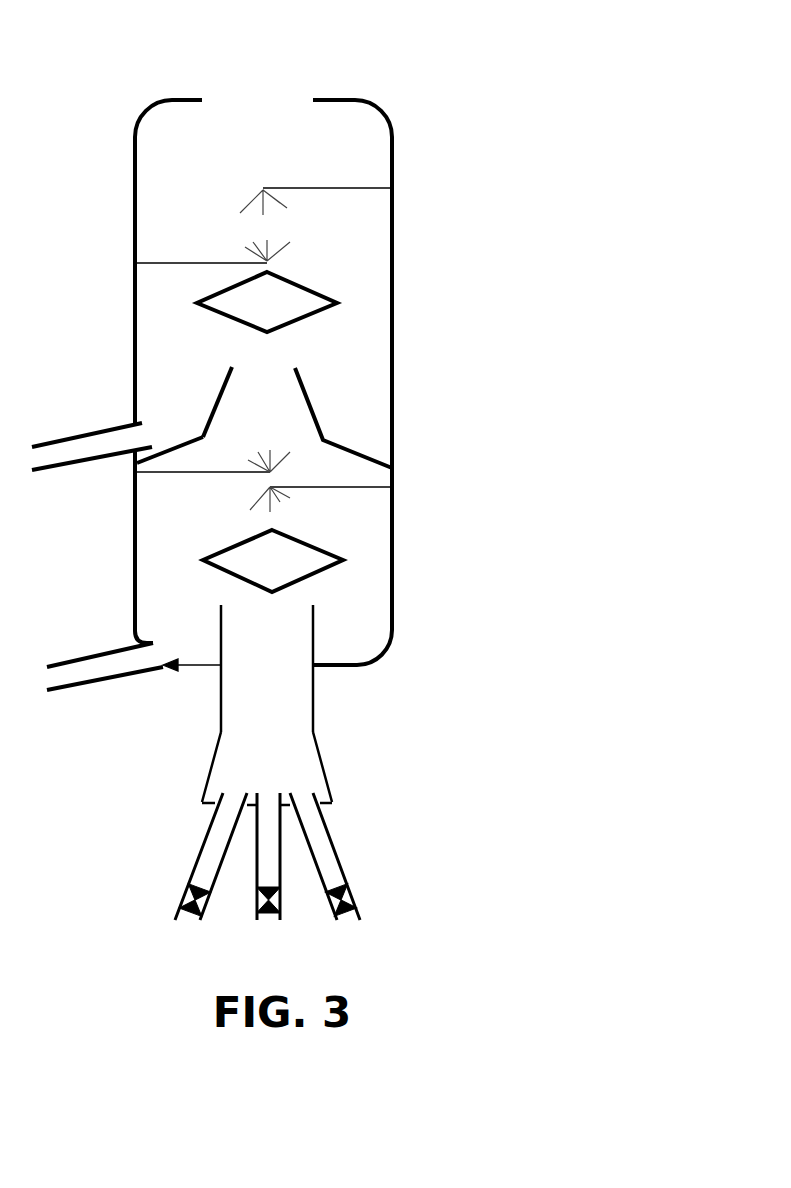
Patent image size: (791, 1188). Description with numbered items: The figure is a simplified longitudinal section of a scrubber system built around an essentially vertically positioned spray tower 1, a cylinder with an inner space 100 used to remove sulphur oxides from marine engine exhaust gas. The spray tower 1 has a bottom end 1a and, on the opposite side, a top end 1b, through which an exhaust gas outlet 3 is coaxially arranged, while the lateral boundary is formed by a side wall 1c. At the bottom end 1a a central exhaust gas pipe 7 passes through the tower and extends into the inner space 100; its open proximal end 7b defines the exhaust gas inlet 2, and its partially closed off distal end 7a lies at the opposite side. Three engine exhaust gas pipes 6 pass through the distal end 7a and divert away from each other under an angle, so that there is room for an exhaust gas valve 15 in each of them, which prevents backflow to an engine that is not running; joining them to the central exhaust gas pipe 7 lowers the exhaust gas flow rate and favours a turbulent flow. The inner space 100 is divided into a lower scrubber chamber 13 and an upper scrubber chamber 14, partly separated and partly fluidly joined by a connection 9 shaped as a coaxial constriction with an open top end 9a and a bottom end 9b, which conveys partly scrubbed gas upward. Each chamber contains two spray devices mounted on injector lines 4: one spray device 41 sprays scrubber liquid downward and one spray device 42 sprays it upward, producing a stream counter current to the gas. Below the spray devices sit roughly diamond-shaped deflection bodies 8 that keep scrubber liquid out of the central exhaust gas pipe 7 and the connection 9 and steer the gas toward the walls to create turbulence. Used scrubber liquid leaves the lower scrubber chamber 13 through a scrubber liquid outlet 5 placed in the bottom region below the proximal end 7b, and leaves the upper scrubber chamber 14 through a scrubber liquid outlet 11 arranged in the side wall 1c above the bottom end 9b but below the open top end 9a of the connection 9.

The spray tower 1 is at (224, 374).
The bottom end 1a is at (337, 670).
The top end 1b is at (330, 107).
The side wall 1c is at (137, 282).
The exhaust gas inlet 2 is at (289, 668).
The exhaust gas outlet 3 is at (257, 88).
The injector line 4 is at (352, 190).
The scrubber liquid outlet 5 is at (77, 673).
The engine exhaust gas pipes 6 is at (213, 848).
The central exhaust gas pipe 7 is at (305, 788).
The distal end 7a is at (327, 807).
The proximal end 7b is at (297, 618).
The deflection bodies 8 is at (273, 315).
The connection 9 is at (245, 443).
The open top end 9a is at (231, 372).
The bottom end 9b is at (143, 465).
The scrubber liquid outlet 11 is at (88, 447).
The lower scrubber chamber 13 is at (358, 513).
The upper scrubber chamber 14 is at (365, 298).
The exhaust gas valve 15 is at (383, 900).
The spray device 41 is at (263, 190).
The spray device 42 is at (267, 261).
The inner space 100 is at (196, 190).